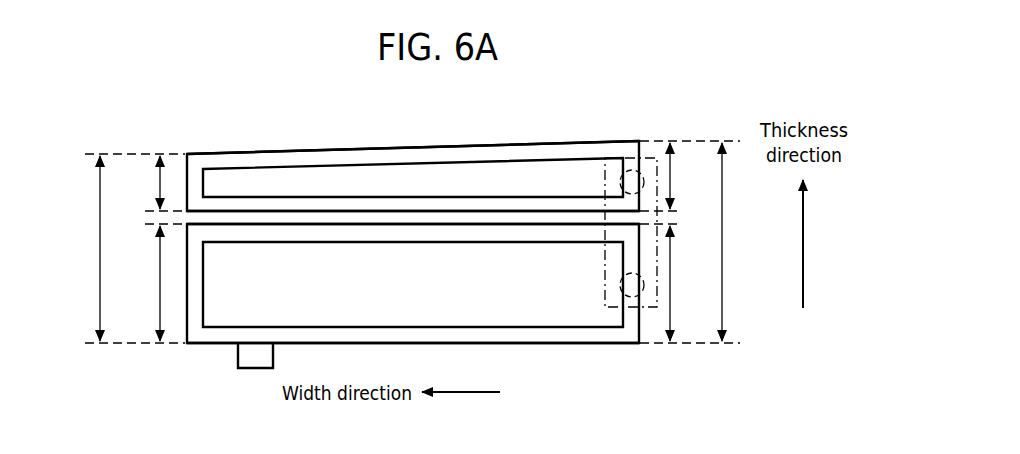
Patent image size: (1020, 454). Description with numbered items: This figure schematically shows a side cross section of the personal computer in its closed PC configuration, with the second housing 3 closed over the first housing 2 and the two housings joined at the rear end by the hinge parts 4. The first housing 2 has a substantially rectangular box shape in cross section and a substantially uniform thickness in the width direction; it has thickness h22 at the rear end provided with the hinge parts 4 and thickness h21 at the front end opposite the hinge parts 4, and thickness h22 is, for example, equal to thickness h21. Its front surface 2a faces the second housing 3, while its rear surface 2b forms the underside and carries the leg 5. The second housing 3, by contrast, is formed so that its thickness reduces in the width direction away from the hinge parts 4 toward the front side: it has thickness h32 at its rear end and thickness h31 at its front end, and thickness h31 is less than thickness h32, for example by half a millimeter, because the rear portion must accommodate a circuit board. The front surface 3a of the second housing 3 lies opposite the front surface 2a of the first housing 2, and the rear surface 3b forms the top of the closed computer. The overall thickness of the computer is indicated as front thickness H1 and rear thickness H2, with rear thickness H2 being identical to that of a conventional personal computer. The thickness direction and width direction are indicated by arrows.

The first housing 2 is at (730, 290).
The second housing 3 is at (730, 187).
The front surface of first housing 2a is at (215, 222).
The rear surface of first housing 2b is at (538, 343).
The front surface of second housing 3a is at (585, 213).
The rear surface of second housing 3b is at (562, 142).
The hinge parts 4 is at (620, 307).
The leg 5 is at (273, 355).
The front thickness H1 is at (100, 245).
The rear thickness H2 is at (722, 245).
The thickness of front end of first housing h21 is at (160, 280).
The thickness of rear end of first housing h22 is at (672, 278).
The thickness of front end of second housing h31 is at (158, 180).
The thickness of rear end of second housing h32 is at (672, 178).